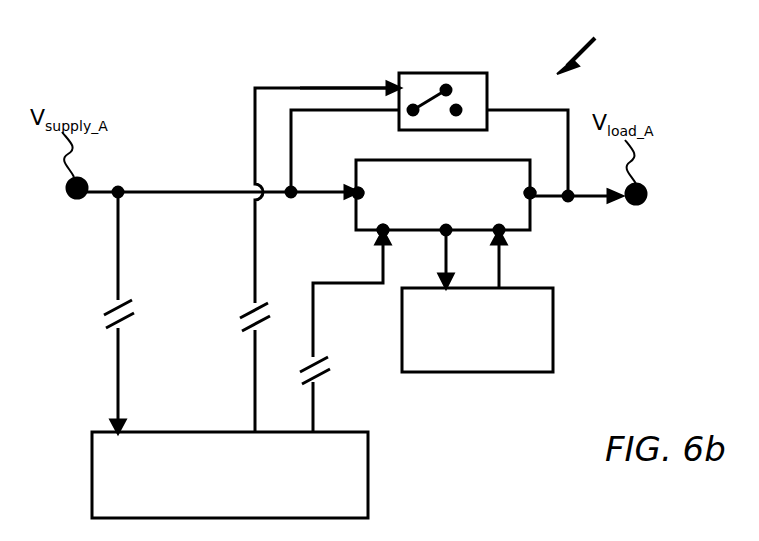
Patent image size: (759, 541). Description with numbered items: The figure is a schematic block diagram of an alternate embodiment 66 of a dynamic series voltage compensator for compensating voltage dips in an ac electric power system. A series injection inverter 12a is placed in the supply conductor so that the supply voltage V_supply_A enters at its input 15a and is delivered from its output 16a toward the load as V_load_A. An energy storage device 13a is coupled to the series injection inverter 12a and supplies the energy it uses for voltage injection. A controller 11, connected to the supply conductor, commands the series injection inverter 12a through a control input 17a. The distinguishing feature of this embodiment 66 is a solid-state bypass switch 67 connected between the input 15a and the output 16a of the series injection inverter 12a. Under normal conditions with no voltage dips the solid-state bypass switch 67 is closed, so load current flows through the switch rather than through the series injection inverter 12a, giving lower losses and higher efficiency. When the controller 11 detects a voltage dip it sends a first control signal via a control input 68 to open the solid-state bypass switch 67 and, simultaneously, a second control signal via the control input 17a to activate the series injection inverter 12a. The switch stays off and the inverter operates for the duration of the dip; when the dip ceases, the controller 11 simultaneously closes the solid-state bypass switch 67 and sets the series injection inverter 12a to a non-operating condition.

The controller 11 is at (369, 475).
The series injection inverter 12a is at (486, 161).
The energy storage device 13a is at (478, 373).
The input 15a is at (356, 189).
The output 16a is at (533, 197).
The control input 17a is at (381, 234).
The alternate embodiment 66 is at (591, 42).
The solid-state bypass switch 67 is at (438, 73).
The control input 68 is at (399, 90).